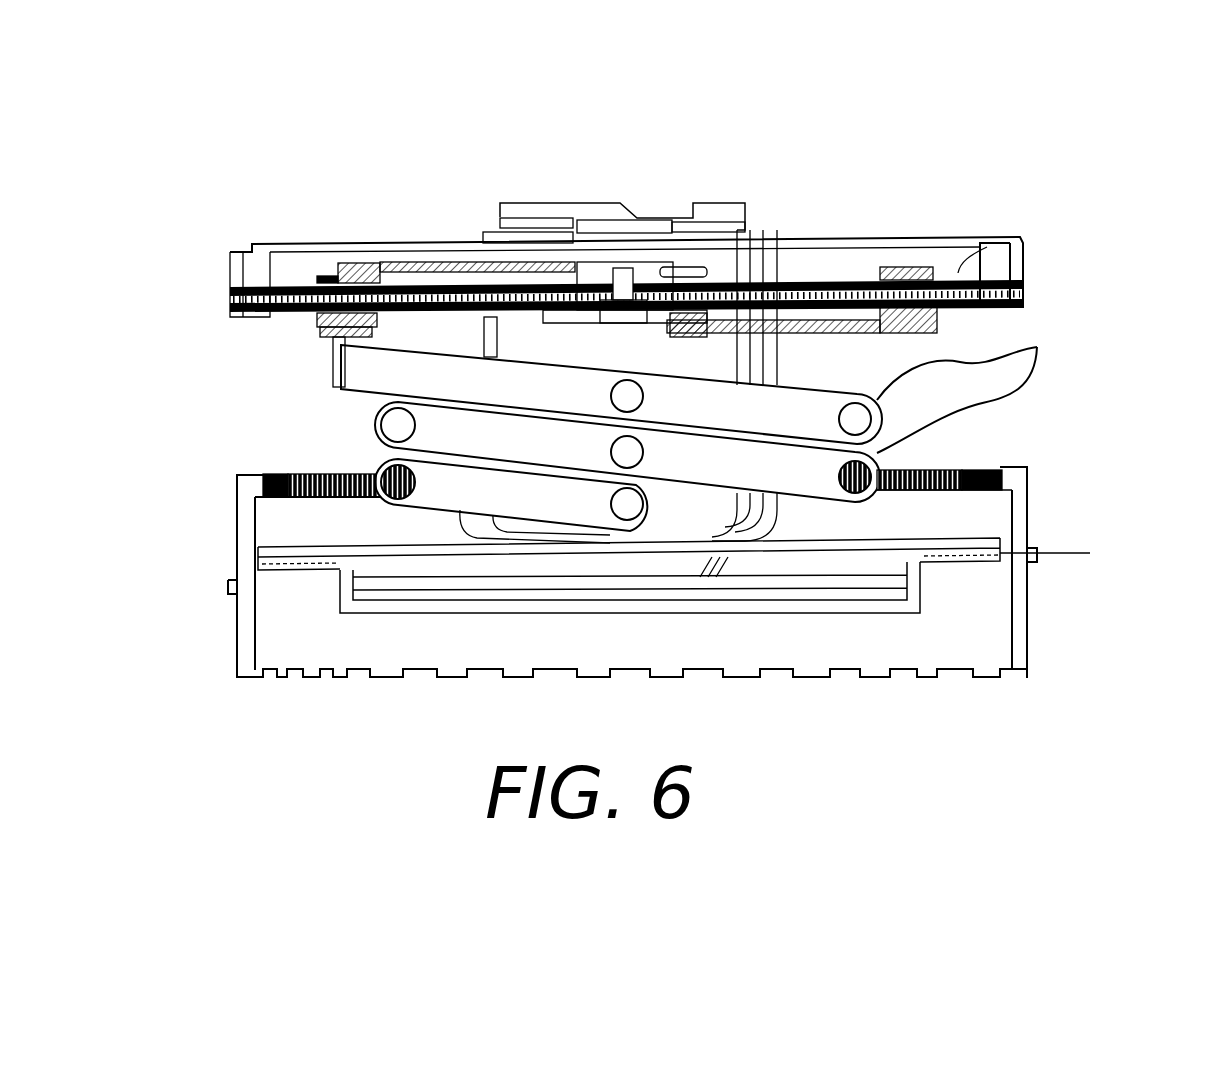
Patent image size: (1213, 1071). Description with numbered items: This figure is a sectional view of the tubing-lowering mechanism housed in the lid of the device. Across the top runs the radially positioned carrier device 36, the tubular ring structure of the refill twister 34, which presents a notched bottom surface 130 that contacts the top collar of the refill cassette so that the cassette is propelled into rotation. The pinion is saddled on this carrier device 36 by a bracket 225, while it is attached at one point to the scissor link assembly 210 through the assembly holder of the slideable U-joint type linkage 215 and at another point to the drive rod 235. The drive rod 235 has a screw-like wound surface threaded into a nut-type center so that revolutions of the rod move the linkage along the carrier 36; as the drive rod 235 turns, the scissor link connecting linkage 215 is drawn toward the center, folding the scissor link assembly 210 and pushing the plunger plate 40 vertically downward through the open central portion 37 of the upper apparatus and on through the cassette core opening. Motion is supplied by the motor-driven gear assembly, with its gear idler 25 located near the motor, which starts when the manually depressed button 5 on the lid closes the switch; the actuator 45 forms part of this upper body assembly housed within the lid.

The manually depressed button 5 is at (658, 205).
The gear idler 25 is at (330, 475).
The refill twister 34 is at (959, 623).
The tubular ring structure 36 is at (963, 273).
The open central portion 37 is at (750, 680).
The plunger plate 40 is at (480, 558).
The actuator 45 is at (677, 260).
The notched bottom surface 130 is at (966, 679).
The scissor link assembly 210 is at (1003, 382).
The slideable U-joint type linkage 215 is at (299, 330).
The bracket 225 is at (337, 273).
The drive rod 235 is at (788, 340).